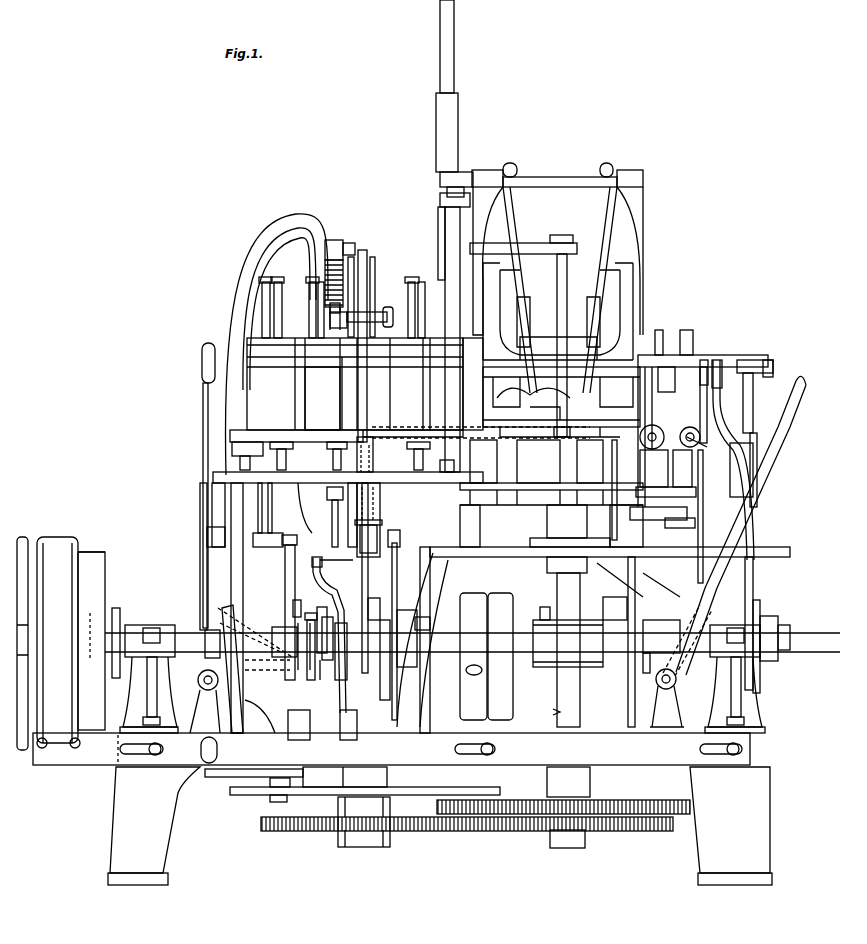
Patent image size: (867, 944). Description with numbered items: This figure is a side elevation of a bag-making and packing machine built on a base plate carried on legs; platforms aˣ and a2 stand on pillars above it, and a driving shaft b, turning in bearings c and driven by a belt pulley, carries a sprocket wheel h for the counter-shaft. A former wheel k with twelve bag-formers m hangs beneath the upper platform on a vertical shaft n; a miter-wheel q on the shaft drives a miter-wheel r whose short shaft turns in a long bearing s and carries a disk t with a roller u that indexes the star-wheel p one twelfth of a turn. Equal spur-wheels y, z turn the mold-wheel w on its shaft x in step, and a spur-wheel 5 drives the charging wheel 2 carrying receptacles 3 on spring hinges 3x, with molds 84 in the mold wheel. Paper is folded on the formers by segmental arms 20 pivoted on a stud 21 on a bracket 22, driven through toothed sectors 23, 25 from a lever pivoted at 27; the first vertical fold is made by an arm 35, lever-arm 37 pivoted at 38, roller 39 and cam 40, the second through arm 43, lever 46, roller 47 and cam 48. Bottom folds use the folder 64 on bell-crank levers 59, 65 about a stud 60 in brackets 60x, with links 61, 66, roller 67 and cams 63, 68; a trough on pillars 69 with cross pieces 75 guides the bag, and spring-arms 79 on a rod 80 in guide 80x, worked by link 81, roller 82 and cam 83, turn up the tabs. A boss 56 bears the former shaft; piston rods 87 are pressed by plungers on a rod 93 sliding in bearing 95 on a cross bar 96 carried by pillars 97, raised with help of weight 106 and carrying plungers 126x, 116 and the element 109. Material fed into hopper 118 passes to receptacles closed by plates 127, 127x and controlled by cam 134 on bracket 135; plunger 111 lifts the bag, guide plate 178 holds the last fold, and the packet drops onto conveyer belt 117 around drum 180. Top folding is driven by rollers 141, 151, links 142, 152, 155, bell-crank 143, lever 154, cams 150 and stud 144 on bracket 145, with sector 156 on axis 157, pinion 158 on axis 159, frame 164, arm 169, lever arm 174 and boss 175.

The rod 93 is at (455, 20).
The bearing 95 is at (458, 106).
The cross bar 96 is at (440, 198).
The hopper 118 is at (596, 250).
The vertical plunger 116 is at (571, 270).
The vertically acting plunger 126x is at (560, 296).
The plate 127x is at (580, 367).
The bracket plate 127 is at (483, 404).
The supporting bracket 135 is at (513, 388).
The stationary cam 134 is at (550, 388).
The charging receptacle 3 is at (626, 432).
The bracket 22 is at (248, 246).
The central rod 87 is at (278, 282).
The toothed sector 23 is at (330, 316).
The toothed sector 25 is at (334, 250).
The pivot 27 is at (355, 250).
The segmental arms 20 is at (368, 270).
The stud 21 is at (390, 308).
The pin 109 is at (330, 310).
The pillars 97 is at (442, 340).
The bag-former m is at (355, 384).
The former wheel k is at (340, 350).
The cross pieces 75 is at (250, 432).
The folder 64 is at (240, 450).
The pillars 69 is at (305, 471).
The spring-arms 79 is at (372, 460).
The platform ax is at (395, 484).
The brackets 60x is at (212, 510).
The fixed stud 60 is at (205, 541).
The bell-crank lever 65 is at (256, 502).
The bell-crank lever 59 is at (321, 530).
The arm 43 is at (352, 556).
The guide 80x is at (372, 500).
The boss 56 is at (380, 522).
The vertical rod 80 is at (382, 532).
The arm 35 is at (390, 550).
The link 61 is at (318, 585).
The link 66 is at (292, 583).
The friction-roller 67 is at (294, 603).
The lever 46 is at (322, 605).
The friction roller 47 is at (328, 625).
The vertical shaft n is at (358, 680).
The cam 48 is at (335, 690).
The link 81 is at (369, 594).
The friction-roller 82 is at (372, 610).
The lever-arm 37 is at (393, 588).
The cam 40 is at (405, 620).
The friction-roller 39 is at (412, 640).
The cam 83 is at (362, 705).
The pivot 38 is at (400, 690).
The cam 63 is at (311, 680).
The cam 68 is at (286, 678).
The miter-wheel q is at (240, 616).
The miter-wheel r is at (262, 680).
The long bearing s is at (265, 708).
The sprocket wheel h is at (122, 614).
The driving shaft b is at (178, 633).
The bearings c is at (146, 670).
The charging wheel 2 is at (483, 461).
The mold 84 is at (579, 483).
The spring hinge 3x is at (538, 461).
The fixed guide plate 178 is at (597, 490).
The mold-wheel w is at (551, 526).
The platform a2 is at (503, 557).
The conveyer-belt 117 is at (545, 612).
The drum 180 is at (568, 643).
The counter-balance weight 106 is at (505, 687).
The vertical shaft x is at (560, 712).
The cam 150 is at (670, 690).
The friction-roller 151 is at (700, 605).
The bracket 145 is at (753, 450).
The link 155 is at (720, 380).
The link 152 is at (702, 510).
The link 142 is at (753, 576).
The friction roller 141 is at (760, 602).
The vertical plunger 111 is at (680, 524).
The lever arm 174 is at (659, 345).
The arm 169 is at (703, 413).
The boss 175 is at (670, 374).
The lever 154 is at (708, 362).
The bell-crank lever 143 is at (725, 352).
The stud 144 is at (772, 366).
The frame 164 is at (700, 402).
The axis 157 is at (670, 428).
The axis 159 is at (654, 467).
The sectoral pinion 158 is at (666, 479).
The toothed sector 156 is at (685, 468).
The disk or crank t is at (212, 780).
The star-wheel p is at (408, 793).
The friction-roller u is at (268, 800).
The spur-wheel y is at (300, 830).
The spur-wheel 5 is at (612, 800).
The spur-wheel z is at (470, 830).